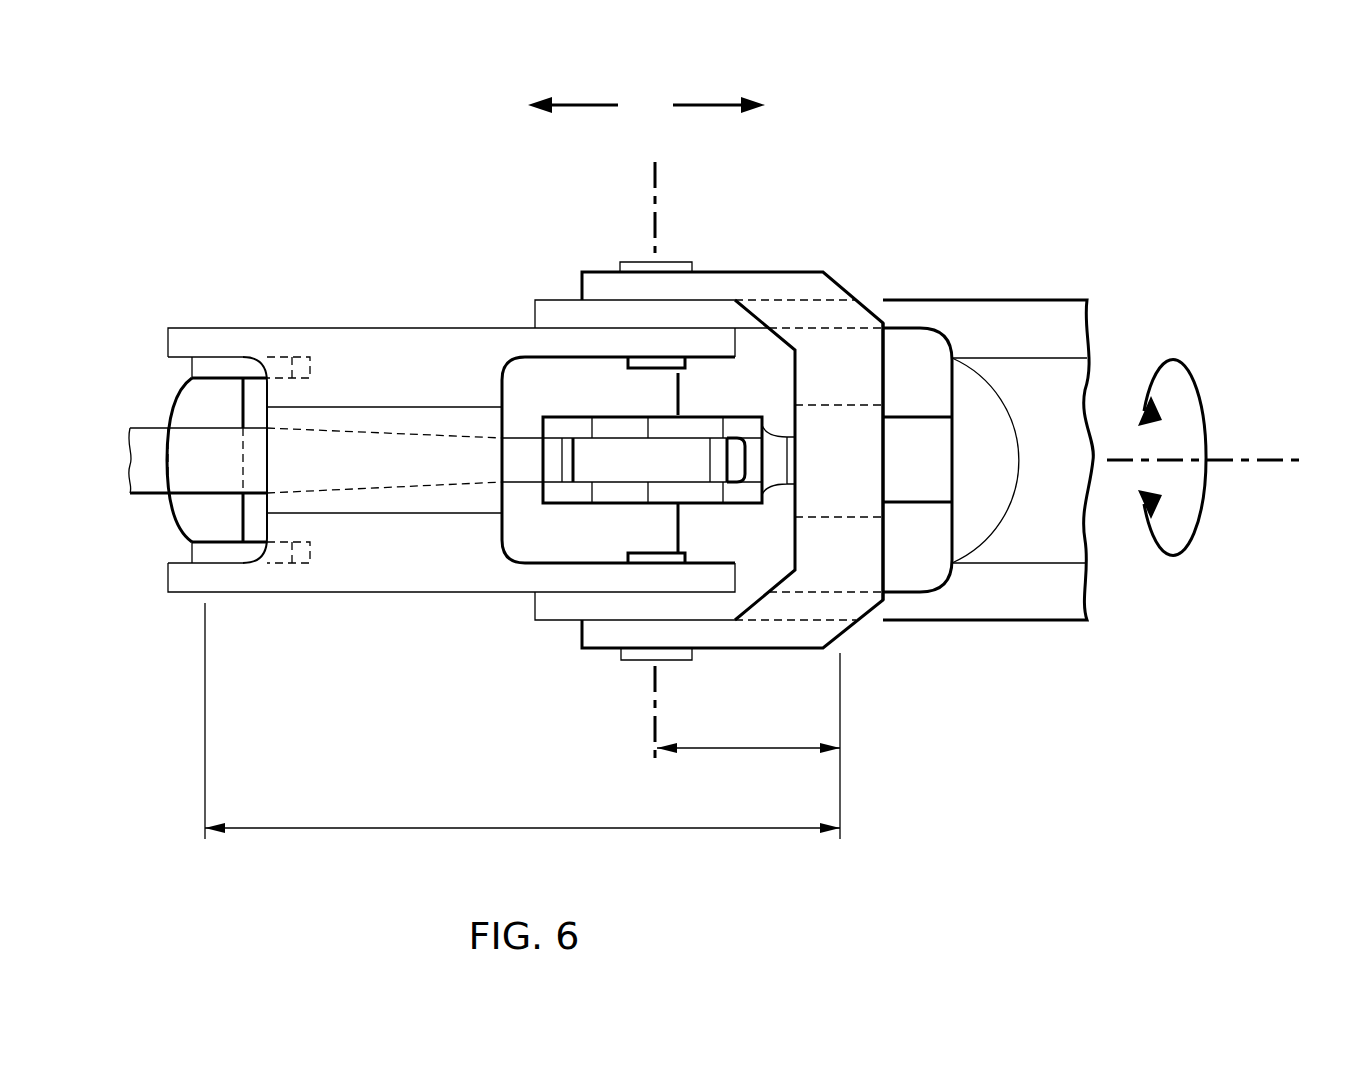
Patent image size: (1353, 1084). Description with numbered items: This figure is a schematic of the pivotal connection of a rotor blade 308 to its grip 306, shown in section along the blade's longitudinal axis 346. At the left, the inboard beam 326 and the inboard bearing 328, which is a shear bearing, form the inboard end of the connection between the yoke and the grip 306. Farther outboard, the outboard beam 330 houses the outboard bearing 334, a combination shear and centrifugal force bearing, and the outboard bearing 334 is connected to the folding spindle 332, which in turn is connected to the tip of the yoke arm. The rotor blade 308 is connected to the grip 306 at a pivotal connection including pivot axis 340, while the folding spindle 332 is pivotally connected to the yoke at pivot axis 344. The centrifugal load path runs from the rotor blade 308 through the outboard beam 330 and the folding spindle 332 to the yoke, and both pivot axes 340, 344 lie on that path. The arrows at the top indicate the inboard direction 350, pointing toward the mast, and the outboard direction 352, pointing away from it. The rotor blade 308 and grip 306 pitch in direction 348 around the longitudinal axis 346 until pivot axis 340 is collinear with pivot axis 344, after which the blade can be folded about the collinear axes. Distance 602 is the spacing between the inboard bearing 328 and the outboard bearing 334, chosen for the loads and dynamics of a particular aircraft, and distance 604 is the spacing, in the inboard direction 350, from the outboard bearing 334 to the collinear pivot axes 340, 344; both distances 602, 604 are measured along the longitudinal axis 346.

The grip 306 is at (385, 328).
The rotor blade 308 is at (1015, 300).
The inboard beam 326 is at (175, 395).
The inboard bearing 328 is at (165, 470).
The outboard beam 330 is at (778, 272).
The folding spindle 332 is at (570, 407).
The outboard bearing 334 is at (850, 405).
The pivot axis 340 is at (589, 453).
The pivot axis 344 is at (655, 180).
The longitudinal axis 346 is at (1285, 458).
The direction 348 is at (1172, 362).
The inboard direction 350 is at (583, 103).
The outboard direction 352 is at (699, 103).
The distance 602 is at (523, 830).
The distance 604 is at (752, 750).